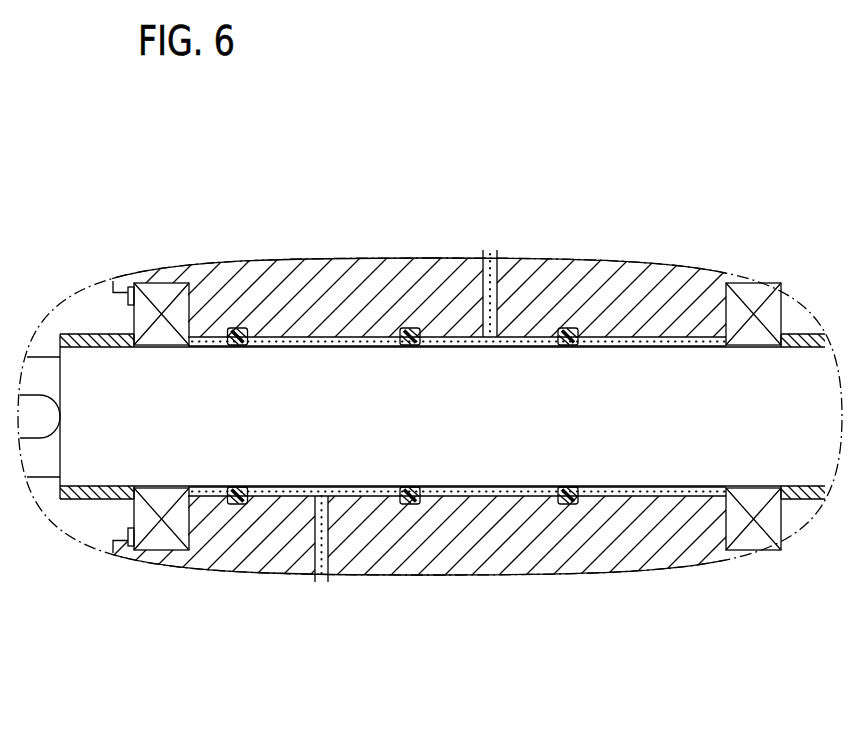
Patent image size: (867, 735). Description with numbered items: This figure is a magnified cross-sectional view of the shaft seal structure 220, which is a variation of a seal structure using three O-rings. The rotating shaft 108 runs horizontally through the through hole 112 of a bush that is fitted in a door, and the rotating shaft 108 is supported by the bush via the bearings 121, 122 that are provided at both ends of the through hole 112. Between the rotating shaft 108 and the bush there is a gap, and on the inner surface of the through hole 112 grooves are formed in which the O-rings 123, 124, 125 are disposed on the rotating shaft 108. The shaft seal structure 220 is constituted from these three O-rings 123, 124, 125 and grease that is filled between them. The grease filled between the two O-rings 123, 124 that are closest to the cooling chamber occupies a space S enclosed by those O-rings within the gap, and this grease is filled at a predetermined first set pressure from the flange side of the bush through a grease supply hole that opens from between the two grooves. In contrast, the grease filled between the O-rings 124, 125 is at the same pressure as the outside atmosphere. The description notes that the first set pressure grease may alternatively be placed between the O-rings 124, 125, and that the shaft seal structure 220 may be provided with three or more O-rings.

The rotating shaft 108 is at (662, 373).
The through hole 112 is at (290, 343).
The bearing 121 is at (155, 298).
The bearing 122 is at (752, 298).
The O-ring 123 is at (236, 504).
The O-ring 124 is at (408, 504).
The O-ring 125 is at (572, 504).
The shaft seal structure 220 is at (320, 596).
The space S is at (492, 494).